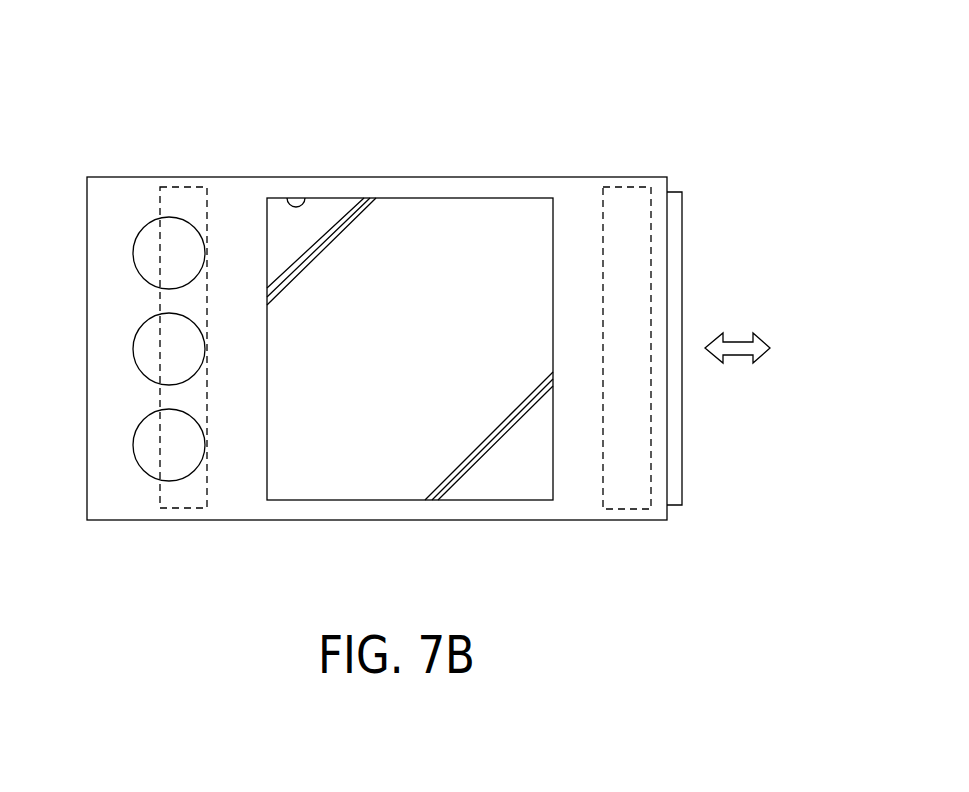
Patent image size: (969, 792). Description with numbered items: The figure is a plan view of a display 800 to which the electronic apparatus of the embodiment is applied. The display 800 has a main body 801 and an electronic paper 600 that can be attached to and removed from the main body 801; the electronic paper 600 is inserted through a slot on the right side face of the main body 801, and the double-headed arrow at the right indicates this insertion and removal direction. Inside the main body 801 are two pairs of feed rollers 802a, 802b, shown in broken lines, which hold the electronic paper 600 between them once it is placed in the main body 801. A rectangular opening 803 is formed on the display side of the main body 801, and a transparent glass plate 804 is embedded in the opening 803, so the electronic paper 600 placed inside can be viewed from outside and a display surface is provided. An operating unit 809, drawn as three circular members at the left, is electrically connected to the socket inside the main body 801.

The display 800 is at (560, 93).
The main body 801 is at (233, 189).
The feed rollers 802a is at (182, 179).
The feed rollers 802b is at (628, 178).
The rectangular opening 803 is at (305, 200).
The transparent glass plate 804 is at (407, 211).
The operating unit 809 is at (152, 222).
The electronic paper 600 is at (683, 283).